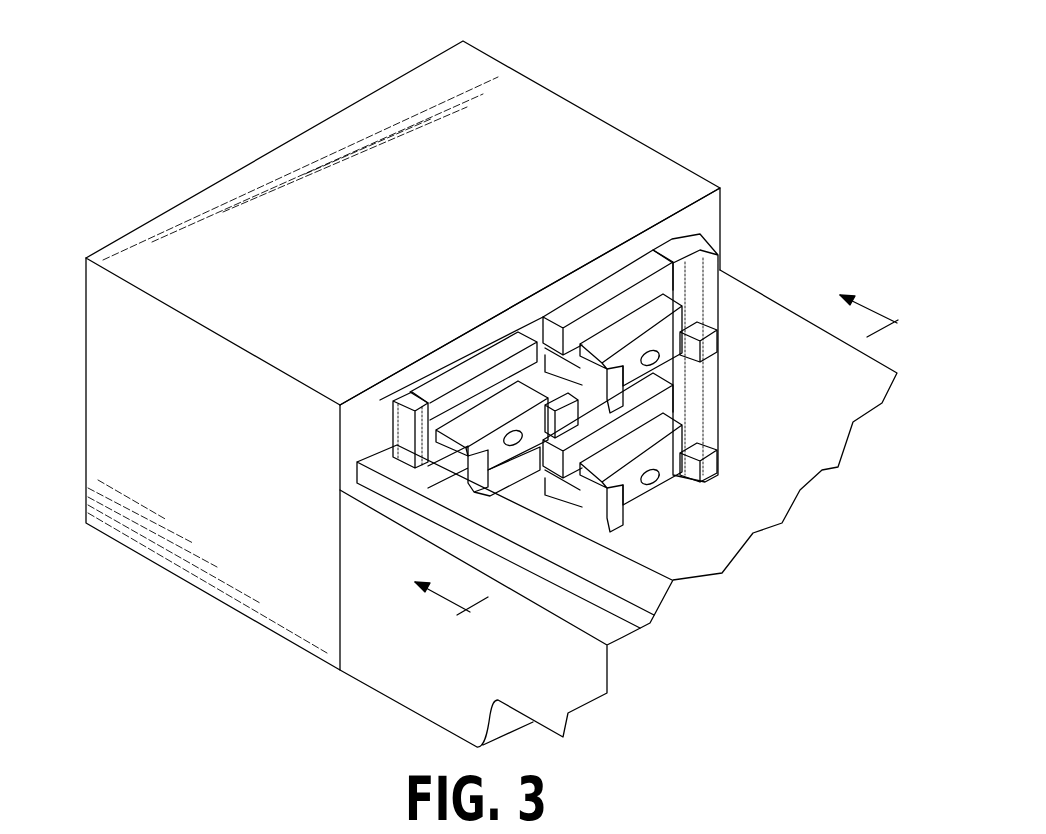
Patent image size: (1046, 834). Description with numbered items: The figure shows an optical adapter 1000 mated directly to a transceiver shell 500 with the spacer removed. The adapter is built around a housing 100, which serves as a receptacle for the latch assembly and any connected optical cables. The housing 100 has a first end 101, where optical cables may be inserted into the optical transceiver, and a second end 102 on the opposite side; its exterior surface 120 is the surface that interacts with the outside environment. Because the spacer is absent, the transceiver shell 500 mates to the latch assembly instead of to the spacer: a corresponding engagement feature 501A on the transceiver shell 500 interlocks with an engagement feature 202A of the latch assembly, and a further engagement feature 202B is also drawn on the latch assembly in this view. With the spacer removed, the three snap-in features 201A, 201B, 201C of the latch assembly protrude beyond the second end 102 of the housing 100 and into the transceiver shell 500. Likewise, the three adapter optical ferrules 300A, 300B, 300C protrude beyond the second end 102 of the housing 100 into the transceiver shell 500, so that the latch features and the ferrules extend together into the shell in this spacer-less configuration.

The optical adapter 1000 is at (619, 84).
The housing 100 is at (541, 83).
The first end 101 is at (85, 395).
The second end 102 is at (710, 216).
The exterior surface 120 is at (238, 567).
The transceiver shell 500 is at (405, 706).
The corresponding engagement feature 501A is at (360, 461).
The snap-in feature 201A is at (530, 381).
The snap-in feature 201B is at (600, 374).
The snap-in feature 201C is at (713, 457).
The engagement feature 202A is at (397, 415).
The second post 202B is at (668, 246).
The adapter optical ferrule 300A is at (490, 413).
The adapter optical ferrule 300B is at (667, 358).
The adapter optical ferrule 300C is at (667, 477).